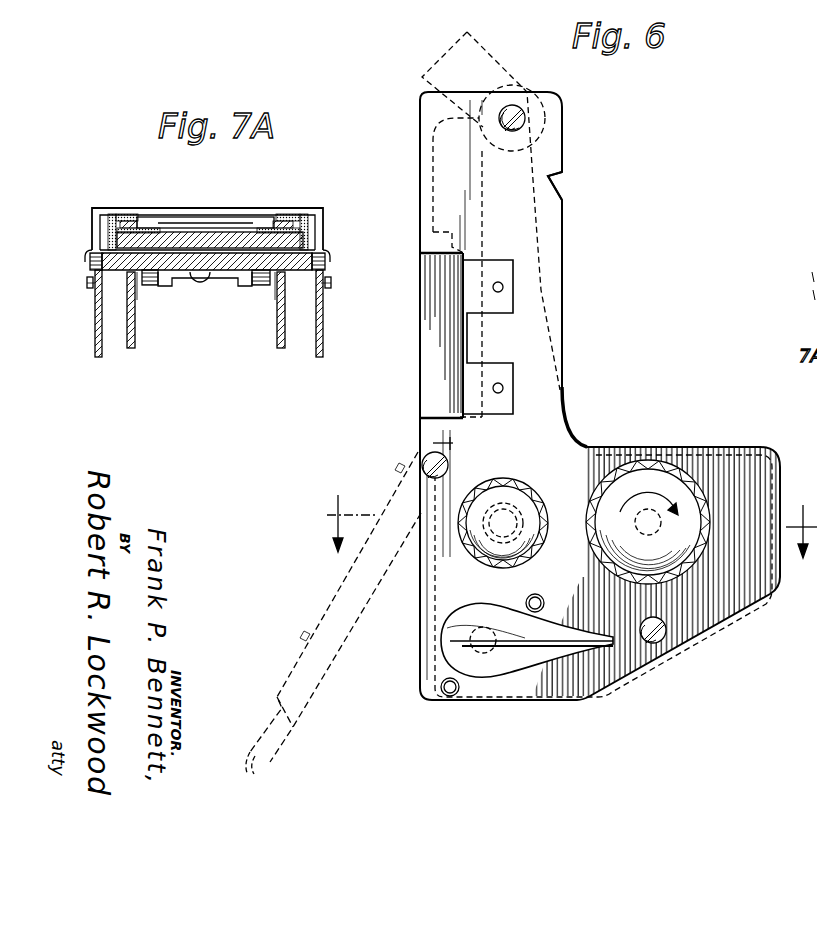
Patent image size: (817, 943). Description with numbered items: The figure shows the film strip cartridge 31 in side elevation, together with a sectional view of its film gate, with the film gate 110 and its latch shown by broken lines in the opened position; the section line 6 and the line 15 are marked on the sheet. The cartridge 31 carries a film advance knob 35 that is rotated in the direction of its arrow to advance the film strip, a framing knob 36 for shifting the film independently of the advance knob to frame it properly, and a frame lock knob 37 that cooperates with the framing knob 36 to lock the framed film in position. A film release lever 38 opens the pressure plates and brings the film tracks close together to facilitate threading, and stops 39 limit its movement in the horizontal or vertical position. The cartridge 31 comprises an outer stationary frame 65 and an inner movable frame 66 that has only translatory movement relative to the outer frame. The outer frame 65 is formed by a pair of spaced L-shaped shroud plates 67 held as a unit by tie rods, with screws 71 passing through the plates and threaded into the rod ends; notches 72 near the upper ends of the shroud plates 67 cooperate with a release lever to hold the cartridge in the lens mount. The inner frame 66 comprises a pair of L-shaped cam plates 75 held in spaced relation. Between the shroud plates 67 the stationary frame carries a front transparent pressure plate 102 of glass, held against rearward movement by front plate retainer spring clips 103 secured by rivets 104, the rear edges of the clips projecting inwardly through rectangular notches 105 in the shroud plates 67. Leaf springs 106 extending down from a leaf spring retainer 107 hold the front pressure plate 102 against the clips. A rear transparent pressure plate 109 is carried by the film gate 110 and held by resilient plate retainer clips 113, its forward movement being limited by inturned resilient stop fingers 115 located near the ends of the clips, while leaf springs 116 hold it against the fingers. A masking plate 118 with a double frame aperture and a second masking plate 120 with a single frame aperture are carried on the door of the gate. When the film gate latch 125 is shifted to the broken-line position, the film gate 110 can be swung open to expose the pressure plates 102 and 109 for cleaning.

In FIG. 6, the section line 6 is at (801, 531).
In FIG. 6, the section line 15 is at (340, 523).
In FIG. 6, the film strip cartridge 31 is at (412, 136).
In FIG. 6, the film advance knob 35 is at (662, 478).
In FIG. 6, the framing knob 36 is at (507, 484).
In FIG. 6, the frame lock knob 37 is at (530, 507).
In FIG. 6, the film release lever 38 is at (480, 608).
In FIG. 6, the stops 39 is at (540, 596).
In FIG. 6, the outer stationary frame 65 is at (574, 133).
In FIG. 6, the inner movable frame 66 is at (590, 422).
In FIG. 6, the L-shaped shroud plates 67 is at (607, 450).
In FIG. 7A, the L-shaped shroud plates 67 is at (95, 340).
In FIG. 6, the screws 71 is at (516, 107).
In FIG. 6, the notches 72 is at (566, 176).
In FIG. 7A, the L-shaped cam plates 75 is at (132, 350).
In FIG. 7A, the front transparent pressure plate 102 is at (191, 278).
In FIG. 6, the front plate retainer spring clips 103 is at (472, 266).
In FIG. 7A, the front plate retainer spring clips 103 is at (92, 262).
In FIG. 6, the rivets 104 is at (501, 292).
In FIG. 7A, the rivets 104 is at (87, 283).
In FIG. 6, the rectangular notches 105 is at (425, 393).
In FIG. 7A, the leaf springs 106 is at (147, 288).
In FIG. 7A, the leaf spring retainer 107 is at (232, 288).
In FIG. 7A, the rear transparent pressure plate 109 is at (172, 238).
In FIG. 6, the film gate 110 is at (310, 598).
In FIG. 7A, the resilient plate retainer clips 113 is at (108, 226).
In FIG. 7A, the inturned resilient stop fingers 115 is at (323, 257).
In FIG. 7A, the leaf springs 116 is at (122, 214).
In FIG. 7A, the masking plate 118 is at (263, 216).
In FIG. 7A, the second masking plate 120 is at (143, 216).
In FIG. 6, the film gate latch 125 is at (492, 50).
In FIG. 7A, the film gate latch 125 is at (316, 211).